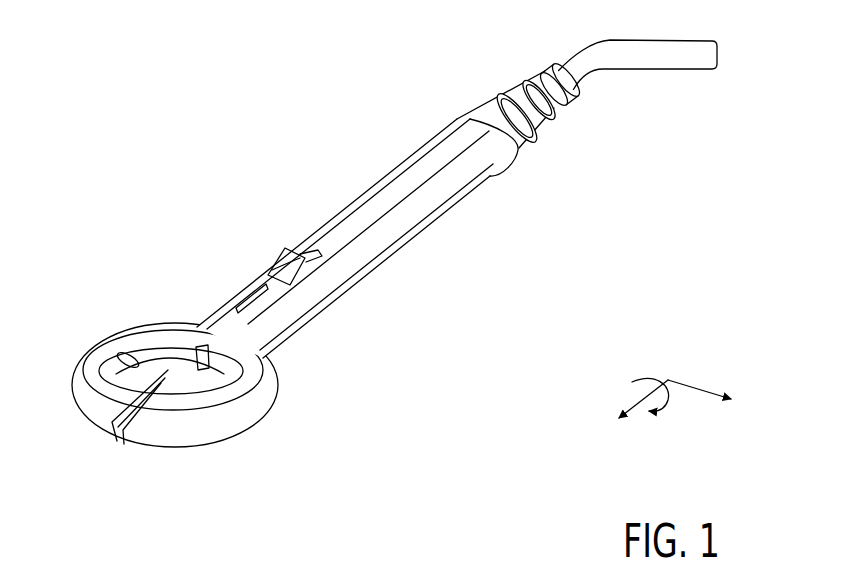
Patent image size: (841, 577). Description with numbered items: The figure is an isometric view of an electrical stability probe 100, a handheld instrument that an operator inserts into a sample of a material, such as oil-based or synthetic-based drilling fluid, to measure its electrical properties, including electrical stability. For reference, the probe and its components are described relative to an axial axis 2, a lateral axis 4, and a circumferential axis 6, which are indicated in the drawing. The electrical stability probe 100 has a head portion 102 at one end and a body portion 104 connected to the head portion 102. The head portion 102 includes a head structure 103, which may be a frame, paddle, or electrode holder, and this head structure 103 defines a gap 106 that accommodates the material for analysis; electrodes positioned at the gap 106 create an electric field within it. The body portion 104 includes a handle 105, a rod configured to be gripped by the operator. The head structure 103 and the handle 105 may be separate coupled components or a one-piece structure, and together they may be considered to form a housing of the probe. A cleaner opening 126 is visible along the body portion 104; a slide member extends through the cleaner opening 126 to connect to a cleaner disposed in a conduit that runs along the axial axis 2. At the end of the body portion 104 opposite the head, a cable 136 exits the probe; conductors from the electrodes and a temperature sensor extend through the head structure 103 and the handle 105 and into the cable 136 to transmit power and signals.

The electrical stability probe 100 is at (506, 316).
The head portion 102 is at (175, 416).
The head structure 103 is at (142, 331).
The body portion 104 is at (430, 101).
The handle 105 is at (370, 214).
The gap 106 is at (114, 451).
The cleaner opening 126 is at (259, 303).
The cable 136 is at (627, 38).
The axial axis 2 is at (633, 410).
The lateral axis 4 is at (697, 384).
The circumferential axis 6 is at (643, 380).